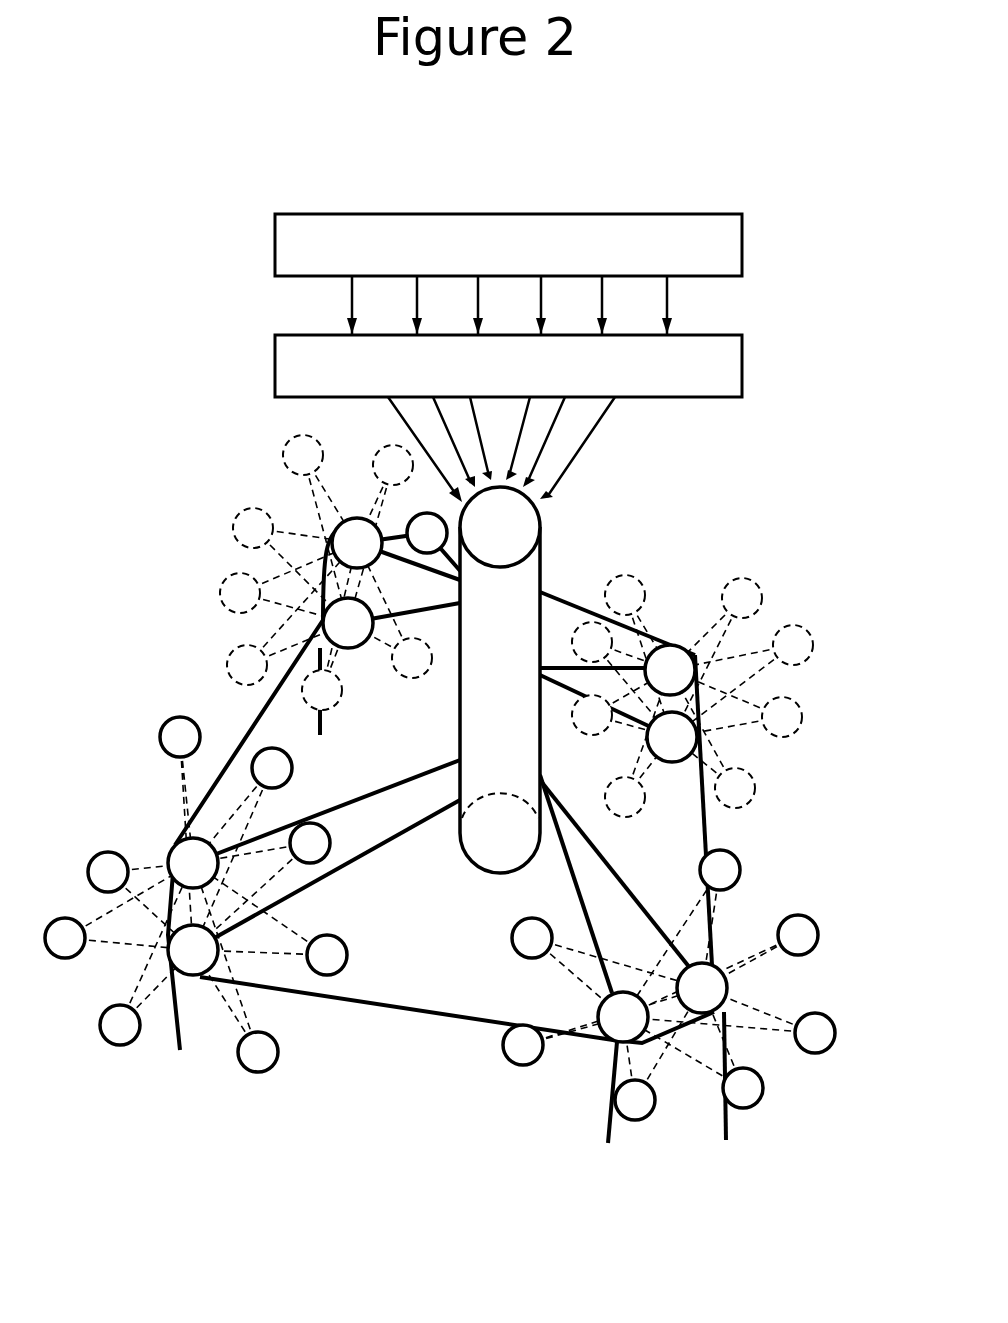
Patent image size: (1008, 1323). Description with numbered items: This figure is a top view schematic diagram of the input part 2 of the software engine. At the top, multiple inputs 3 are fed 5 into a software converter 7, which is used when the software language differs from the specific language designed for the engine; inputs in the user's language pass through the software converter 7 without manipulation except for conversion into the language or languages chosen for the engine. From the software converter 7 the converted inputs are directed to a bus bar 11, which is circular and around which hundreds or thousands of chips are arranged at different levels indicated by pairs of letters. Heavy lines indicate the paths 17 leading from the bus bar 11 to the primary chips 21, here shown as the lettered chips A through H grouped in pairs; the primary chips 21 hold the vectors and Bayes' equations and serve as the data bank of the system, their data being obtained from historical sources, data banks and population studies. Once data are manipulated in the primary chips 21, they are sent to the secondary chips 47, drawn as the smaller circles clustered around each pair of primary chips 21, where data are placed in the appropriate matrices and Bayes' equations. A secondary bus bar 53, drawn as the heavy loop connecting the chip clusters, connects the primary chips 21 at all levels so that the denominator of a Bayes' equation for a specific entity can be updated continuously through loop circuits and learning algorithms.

The input part 2 is at (220, 486).
The multiple inputs 3 is at (275, 262).
The feed 5 is at (350, 294).
The software converter 7 is at (275, 352).
The bus bar 11 is at (537, 580).
The paths 17 is at (360, 800).
The primary chips 21 is at (682, 645).
The secondary chips 47 is at (223, 607).
The secondary bus bar 53 is at (707, 820).